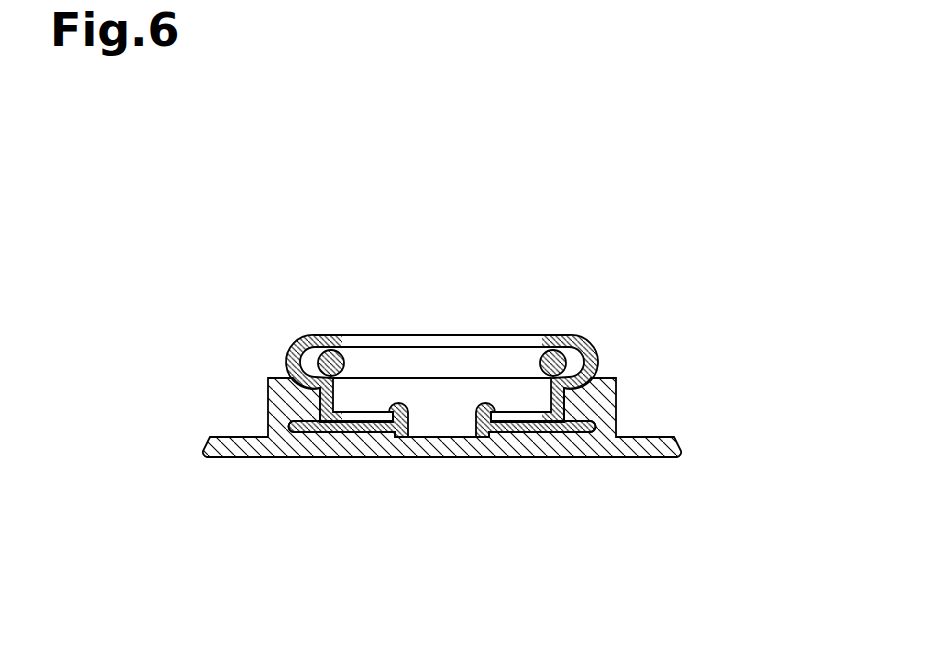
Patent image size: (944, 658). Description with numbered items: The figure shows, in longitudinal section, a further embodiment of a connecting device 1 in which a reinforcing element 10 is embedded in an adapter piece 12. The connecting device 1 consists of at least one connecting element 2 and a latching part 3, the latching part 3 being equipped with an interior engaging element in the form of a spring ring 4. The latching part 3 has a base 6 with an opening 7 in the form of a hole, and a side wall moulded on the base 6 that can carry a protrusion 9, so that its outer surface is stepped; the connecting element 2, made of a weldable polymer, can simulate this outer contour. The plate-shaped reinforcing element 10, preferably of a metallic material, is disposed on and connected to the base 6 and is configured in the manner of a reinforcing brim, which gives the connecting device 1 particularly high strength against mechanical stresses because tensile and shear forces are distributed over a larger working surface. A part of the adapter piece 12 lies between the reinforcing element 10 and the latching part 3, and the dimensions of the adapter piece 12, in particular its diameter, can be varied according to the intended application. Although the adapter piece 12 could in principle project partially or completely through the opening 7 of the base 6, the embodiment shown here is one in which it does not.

The connecting device 1 is at (727, 245).
The connecting element 2 is at (611, 0).
The latching part 3 is at (309, 336).
The spring ring 4 is at (333, 346).
The base 6 is at (515, 420).
The opening 7 is at (435, 420).
The protrusion 9 is at (600, 363).
The reinforcing element 10 is at (290, 420).
The adapter piece 12 is at (255, 454).